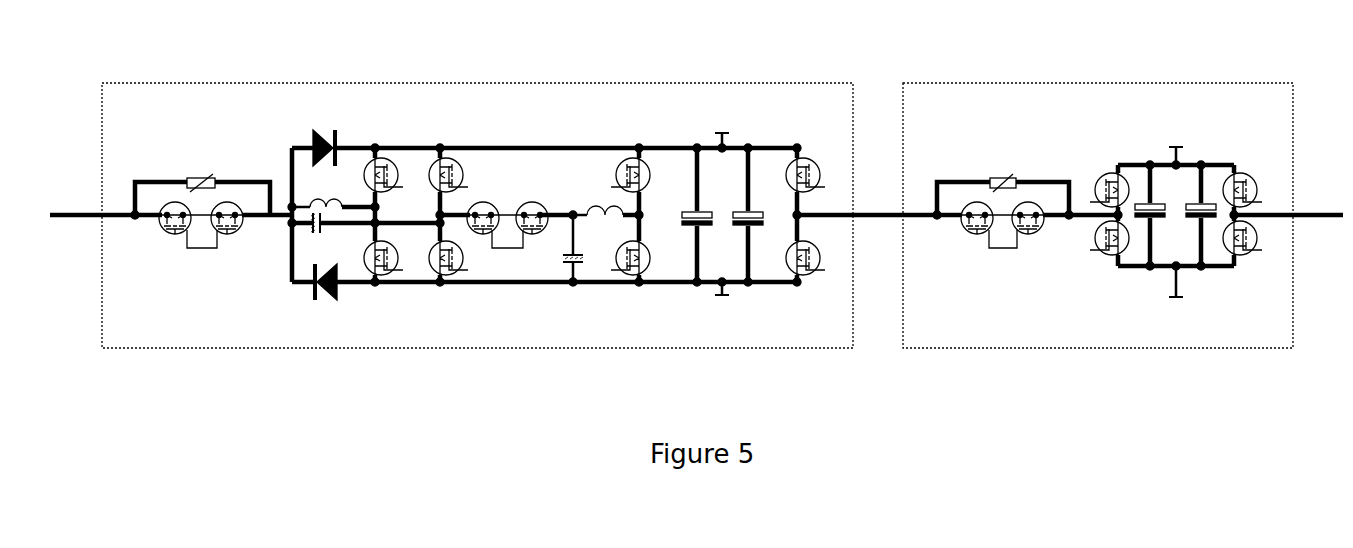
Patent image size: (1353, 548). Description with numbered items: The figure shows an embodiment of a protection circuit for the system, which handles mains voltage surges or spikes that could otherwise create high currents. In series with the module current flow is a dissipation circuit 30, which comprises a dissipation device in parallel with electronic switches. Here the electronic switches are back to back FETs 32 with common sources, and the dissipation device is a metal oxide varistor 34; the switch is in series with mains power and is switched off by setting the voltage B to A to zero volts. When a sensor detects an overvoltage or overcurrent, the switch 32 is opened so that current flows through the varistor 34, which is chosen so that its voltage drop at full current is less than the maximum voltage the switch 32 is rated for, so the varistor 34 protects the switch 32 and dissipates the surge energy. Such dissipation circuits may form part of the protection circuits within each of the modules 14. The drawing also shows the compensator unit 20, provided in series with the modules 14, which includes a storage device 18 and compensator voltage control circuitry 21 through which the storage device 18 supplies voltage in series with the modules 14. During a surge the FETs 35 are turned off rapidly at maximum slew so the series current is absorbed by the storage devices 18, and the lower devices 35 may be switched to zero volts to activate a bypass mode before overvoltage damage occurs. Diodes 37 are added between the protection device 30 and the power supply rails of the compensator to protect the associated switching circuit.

The module 14 is at (763, 77).
The storage device 18 is at (763, 157).
The compensator unit 20 is at (779, 198).
The compensator voltage control circuitry 21 is at (408, 133).
The dissipation circuit 30 is at (602, 136).
The back to back FETs 32 is at (225, 247).
The metal oxide varistor 34 is at (195, 173).
The FETs 35 is at (605, 165).
The diodes 37 is at (325, 123).